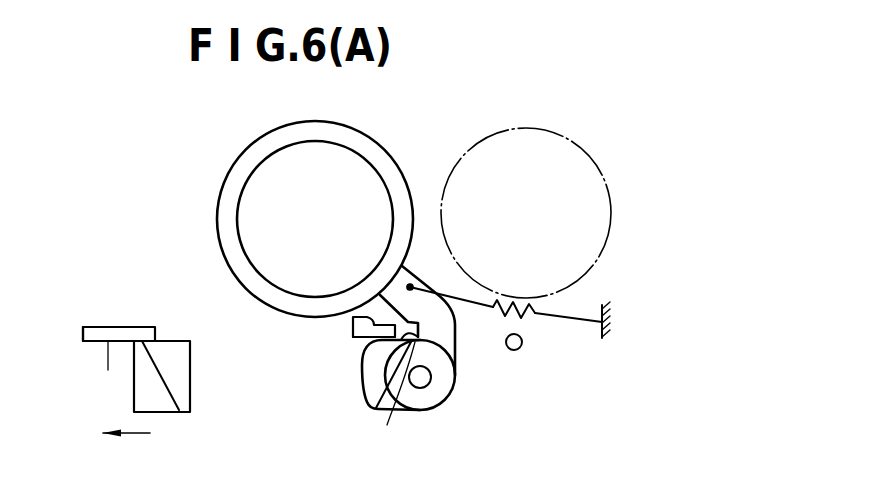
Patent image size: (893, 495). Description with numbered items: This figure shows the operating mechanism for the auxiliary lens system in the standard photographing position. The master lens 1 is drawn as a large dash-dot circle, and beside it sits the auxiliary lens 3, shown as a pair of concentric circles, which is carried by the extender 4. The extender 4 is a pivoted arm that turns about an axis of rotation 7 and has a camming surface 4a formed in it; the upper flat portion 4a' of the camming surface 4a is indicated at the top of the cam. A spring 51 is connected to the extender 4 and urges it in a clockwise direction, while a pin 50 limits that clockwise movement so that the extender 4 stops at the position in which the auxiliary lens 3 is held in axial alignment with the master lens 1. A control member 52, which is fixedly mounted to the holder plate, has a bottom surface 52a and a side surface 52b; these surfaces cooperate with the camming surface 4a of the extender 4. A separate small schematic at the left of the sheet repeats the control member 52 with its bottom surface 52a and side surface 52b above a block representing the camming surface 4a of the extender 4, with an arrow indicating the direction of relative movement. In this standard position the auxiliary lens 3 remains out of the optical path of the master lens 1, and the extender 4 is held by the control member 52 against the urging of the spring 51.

The master lens 1 is at (567, 150).
The auxiliary lens 3 is at (243, 203).
The extender 4 is at (447, 328).
The camming surface 4a is at (298, 369).
The upper flat portion of the camming surface 4a' is at (395, 402).
The axis of rotation of the extender 7 is at (432, 382).
The pin 50 is at (520, 348).
The spring 51 is at (567, 318).
The control member 52 is at (352, 328).
The bottom surface of the control member 52a is at (360, 338).
The side surface of the control member 52b is at (83, 340).